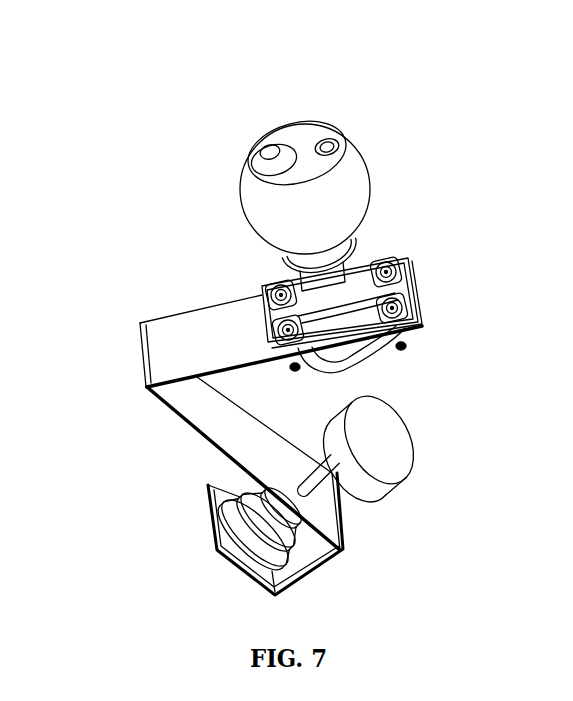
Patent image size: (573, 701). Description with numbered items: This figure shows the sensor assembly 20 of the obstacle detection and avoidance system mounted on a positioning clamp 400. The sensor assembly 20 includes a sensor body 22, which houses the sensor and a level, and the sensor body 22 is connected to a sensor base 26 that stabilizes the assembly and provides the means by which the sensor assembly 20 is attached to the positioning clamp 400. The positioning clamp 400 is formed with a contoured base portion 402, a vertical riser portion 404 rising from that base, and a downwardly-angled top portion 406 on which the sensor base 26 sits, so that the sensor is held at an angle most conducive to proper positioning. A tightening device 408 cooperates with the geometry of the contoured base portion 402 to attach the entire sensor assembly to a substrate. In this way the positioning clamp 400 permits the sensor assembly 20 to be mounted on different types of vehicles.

The sensor assembly 20 is at (368, 121).
The sensor body 22 is at (355, 190).
The sensor base 26 is at (398, 257).
The positioning clamp 400 is at (150, 290).
The contoured base portion 402 is at (255, 583).
The vertical riser portion 404 is at (183, 425).
The downwardly-angled top portion 406 is at (170, 347).
The tightening device 408 is at (397, 480).